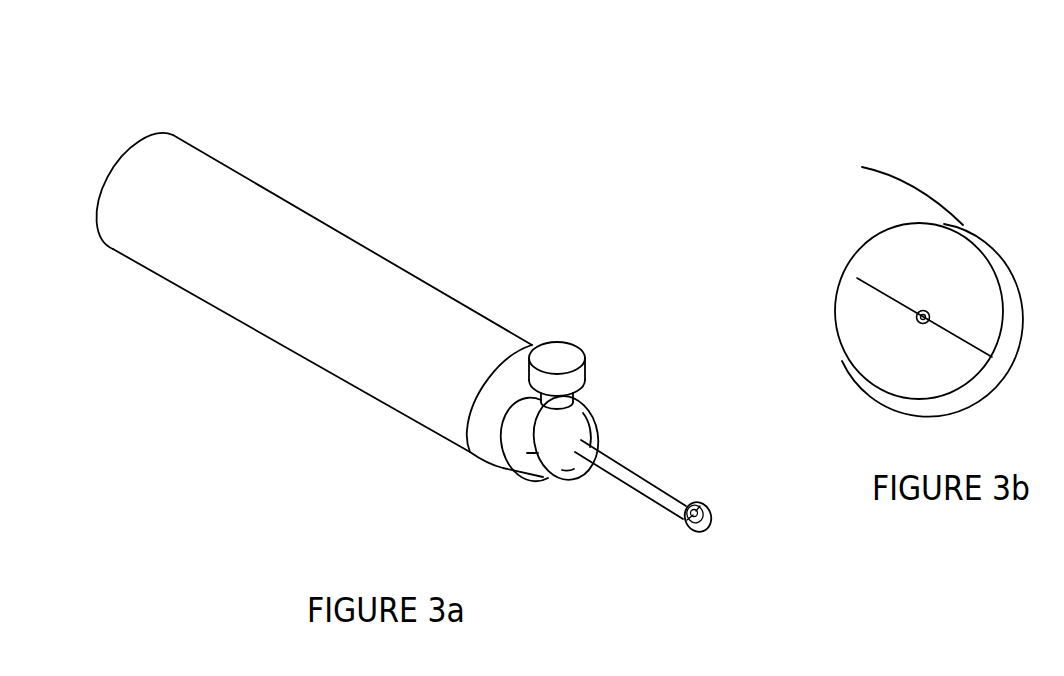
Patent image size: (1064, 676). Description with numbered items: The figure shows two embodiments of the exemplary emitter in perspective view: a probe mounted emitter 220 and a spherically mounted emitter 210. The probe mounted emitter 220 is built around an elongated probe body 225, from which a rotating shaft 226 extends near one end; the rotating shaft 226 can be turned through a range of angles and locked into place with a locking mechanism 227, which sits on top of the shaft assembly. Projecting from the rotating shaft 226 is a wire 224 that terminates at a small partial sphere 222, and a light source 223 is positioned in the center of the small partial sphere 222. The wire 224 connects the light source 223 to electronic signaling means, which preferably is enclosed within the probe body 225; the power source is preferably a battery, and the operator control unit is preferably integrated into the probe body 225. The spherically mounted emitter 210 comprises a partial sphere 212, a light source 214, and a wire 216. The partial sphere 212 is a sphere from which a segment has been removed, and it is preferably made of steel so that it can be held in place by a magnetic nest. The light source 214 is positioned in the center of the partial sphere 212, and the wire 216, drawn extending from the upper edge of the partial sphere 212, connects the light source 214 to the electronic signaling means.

In FIG. 3b, the spherically mounted emitter 210 is at (845, 83).
In FIG. 3b, the partial sphere 212 is at (846, 293).
In FIG. 3b, the light source 214 is at (917, 317).
In FIG. 3b, the wire 216 is at (903, 187).
In FIG. 3a, the probe mounted emitter 220 is at (462, 211).
In FIG. 3a, the small partial sphere 222 is at (712, 517).
In FIG. 3a, the light source 223 is at (692, 527).
In FIG. 3a, the wire 224 is at (688, 513).
In FIG. 3a, the probe body 225 is at (313, 364).
In FIG. 3a, the rotating shaft 226 is at (605, 448).
In FIG. 3a, the locking mechanism 227 is at (587, 373).